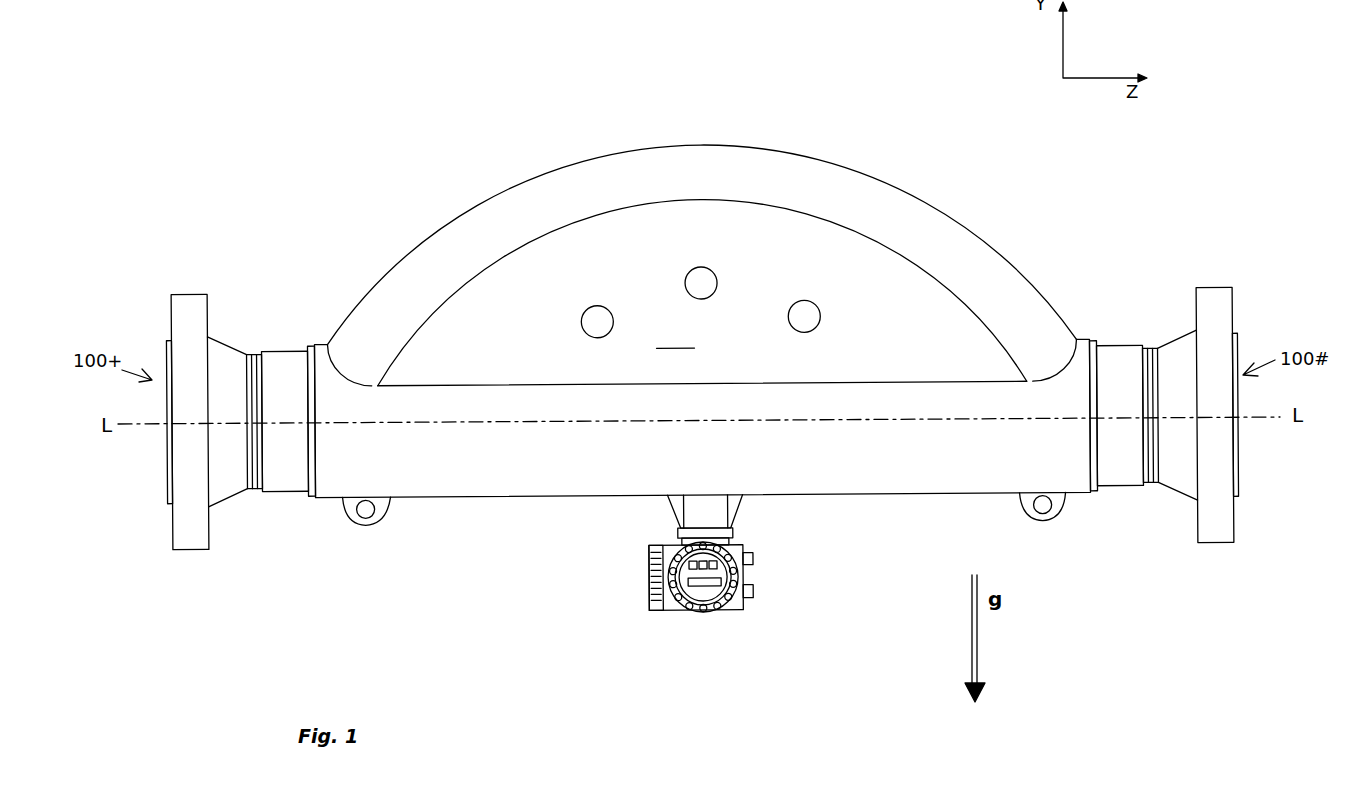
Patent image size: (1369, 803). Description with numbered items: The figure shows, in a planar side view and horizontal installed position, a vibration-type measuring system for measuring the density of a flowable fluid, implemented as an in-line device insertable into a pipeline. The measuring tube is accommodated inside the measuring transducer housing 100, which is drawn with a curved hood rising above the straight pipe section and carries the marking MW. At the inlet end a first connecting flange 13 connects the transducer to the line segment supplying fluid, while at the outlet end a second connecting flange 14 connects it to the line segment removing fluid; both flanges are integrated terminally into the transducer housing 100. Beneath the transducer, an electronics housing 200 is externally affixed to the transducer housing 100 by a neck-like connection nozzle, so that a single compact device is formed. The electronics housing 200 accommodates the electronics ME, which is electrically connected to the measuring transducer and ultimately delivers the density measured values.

The measuring transducer housing 100 is at (702, 334).
The first connecting flange 13 is at (193, 302).
The second connecting flange 14 is at (1203, 298).
The electronics housing 200 is at (665, 600).
The electronics ME is at (782, 570).
The transducer housing MW is at (675, 337).